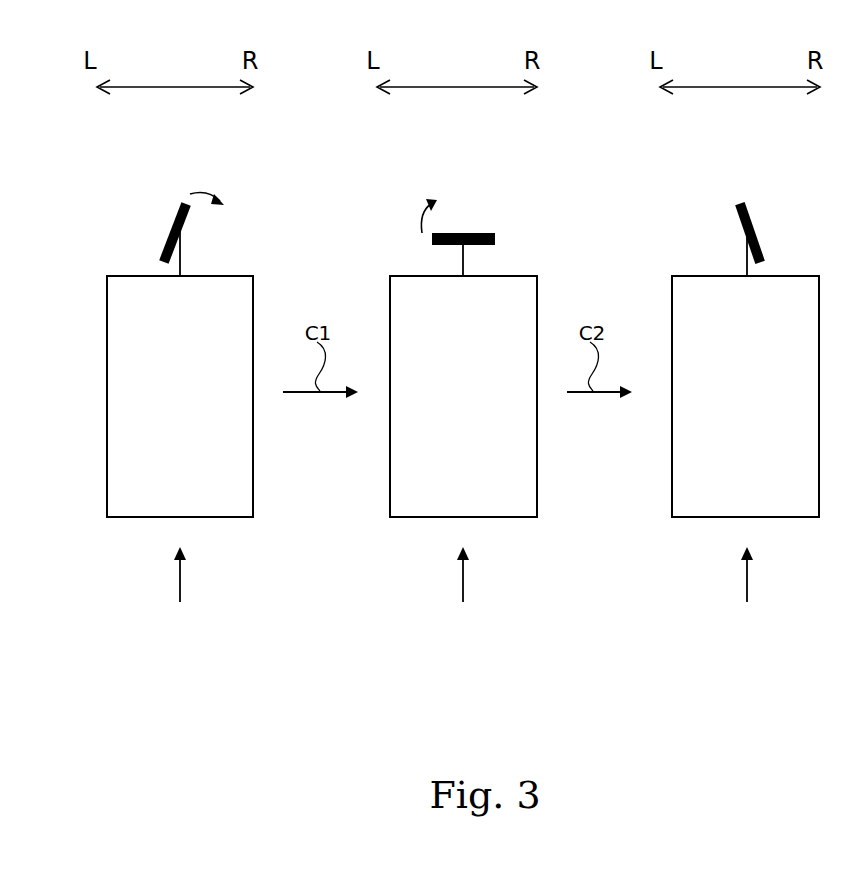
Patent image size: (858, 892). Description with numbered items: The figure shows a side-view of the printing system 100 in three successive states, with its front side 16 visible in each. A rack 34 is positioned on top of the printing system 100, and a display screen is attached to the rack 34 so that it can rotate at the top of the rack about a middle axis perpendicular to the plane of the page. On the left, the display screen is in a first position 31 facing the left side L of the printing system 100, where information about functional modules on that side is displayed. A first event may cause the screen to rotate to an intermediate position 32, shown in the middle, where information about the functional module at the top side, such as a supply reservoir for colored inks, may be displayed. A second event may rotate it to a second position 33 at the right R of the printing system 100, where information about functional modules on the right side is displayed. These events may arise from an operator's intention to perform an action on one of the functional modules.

The front side 16 is at (170, 412).
The first position 31 is at (172, 220).
The intermediate position 32 is at (476, 233).
The second position 33 is at (747, 203).
The rack 34 is at (181, 247).
The printing system 100 is at (463, 591).